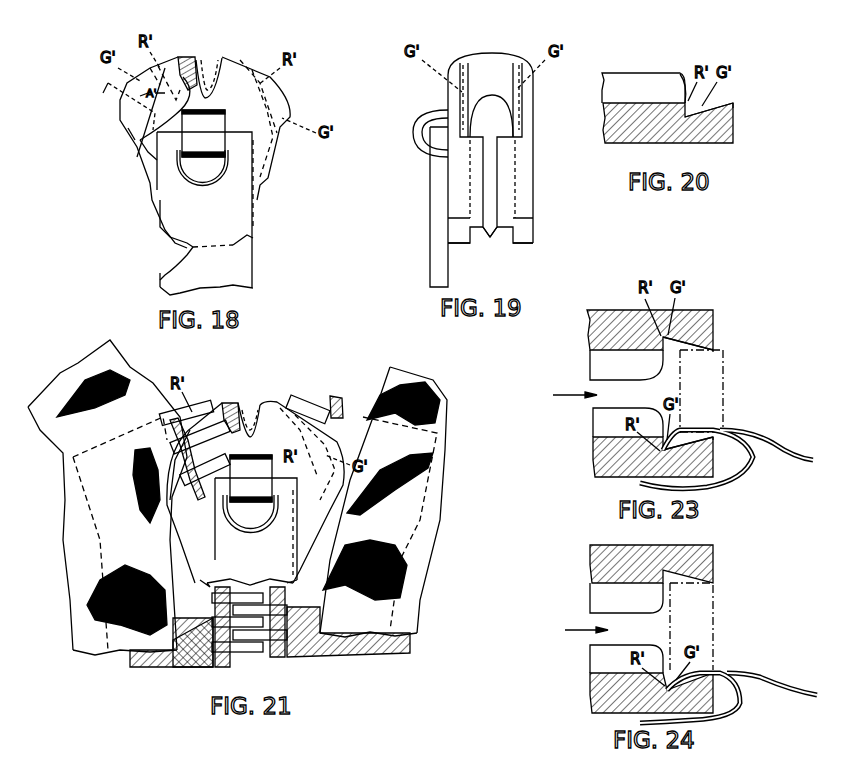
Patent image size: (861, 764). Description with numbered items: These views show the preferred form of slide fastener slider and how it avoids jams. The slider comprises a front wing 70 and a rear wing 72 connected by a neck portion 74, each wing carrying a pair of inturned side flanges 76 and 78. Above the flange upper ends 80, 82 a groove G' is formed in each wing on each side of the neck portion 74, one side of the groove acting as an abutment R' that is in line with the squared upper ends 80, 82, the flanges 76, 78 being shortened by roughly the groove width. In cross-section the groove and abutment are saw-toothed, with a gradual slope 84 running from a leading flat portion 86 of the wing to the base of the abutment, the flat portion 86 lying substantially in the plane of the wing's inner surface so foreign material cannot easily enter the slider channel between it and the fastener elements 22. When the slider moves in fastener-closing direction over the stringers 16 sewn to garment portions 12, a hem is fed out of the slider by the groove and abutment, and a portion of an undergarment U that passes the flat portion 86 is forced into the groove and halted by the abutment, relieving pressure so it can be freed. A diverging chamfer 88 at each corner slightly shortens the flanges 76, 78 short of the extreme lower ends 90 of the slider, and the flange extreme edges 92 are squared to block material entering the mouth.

In FIG. 21, the portions of a garment 12 is at (82, 652).
In FIG. 21, the stringers 16 is at (148, 668).
In FIG. 21, the fastener elements 22 is at (200, 410).
In FIG. 23, the fastener elements 22 is at (727, 400).
In FIG. 24, the fastener elements 22 is at (716, 622).
In FIG. 18, the front wing 70 is at (232, 70).
In FIG. 19, the front wing 70 is at (456, 200).
In FIG. 21, the front wing 70 is at (255, 493).
In FIG. 23, the front wing 70 is at (603, 310).
In FIG. 24, the front wing 70 is at (651, 609).
In FIG. 18, the rear wing 72 is at (172, 62).
In FIG. 19, the rear wing 72 is at (522, 198).
In FIG. 20, the rear wing 72 is at (650, 141).
In FIG. 23, the rear wing 72 is at (600, 475).
In FIG. 24, the rear wing 72 is at (651, 693).
In FIG. 18, the neck portion 74 is at (186, 65).
In FIG. 19, the neck portion 74 is at (487, 64).
In FIG. 19, the inturned side flanges 76 is at (470, 168).
In FIG. 23, the inturned side flanges 76 is at (600, 367).
In FIG. 18, the inturned side flanges 78 is at (136, 148).
In FIG. 19, the inturned side flanges 78 is at (504, 164).
In FIG. 20, the inturned side flanges 78 is at (625, 82).
In FIG. 21, the inturned side flanges 78 is at (190, 510).
In FIG. 23, the inturned side flanges 78 is at (600, 428).
In FIG. 18, the upper end of inturned side flange 80 is at (305, 160).
In FIG. 19, the upper end of inturned side flange 80 is at (474, 138).
In FIG. 18, the upper end of inturned side flange 82 is at (126, 133).
In FIG. 19, the upper end of inturned side flange 82 is at (503, 137).
In FIG. 20, the upper end of inturned side flange 82 is at (683, 97).
In FIG. 20, the gradual slope 84 is at (700, 112).
In FIG. 23, the gradual slope 84 is at (700, 340).
In FIG. 20, the leading flat portion 86 is at (720, 107).
In FIG. 23, the leading flat portion 86 is at (713, 350).
In FIG. 18, the diverging chamfer 88 is at (163, 237).
In FIG. 21, the diverging chamfer 88 is at (205, 588).
In FIG. 18, the extreme lower ends of the slider 90 is at (176, 252).
In FIG. 19, the extreme lower ends of the slider 90 is at (458, 246).
In FIG. 19, the extreme edges of the inturned flanges 92 is at (506, 228).
In FIG. 23, the portion of an undergarment U is at (782, 450).
In FIG. 24, the portion of an undergarment U is at (762, 680).